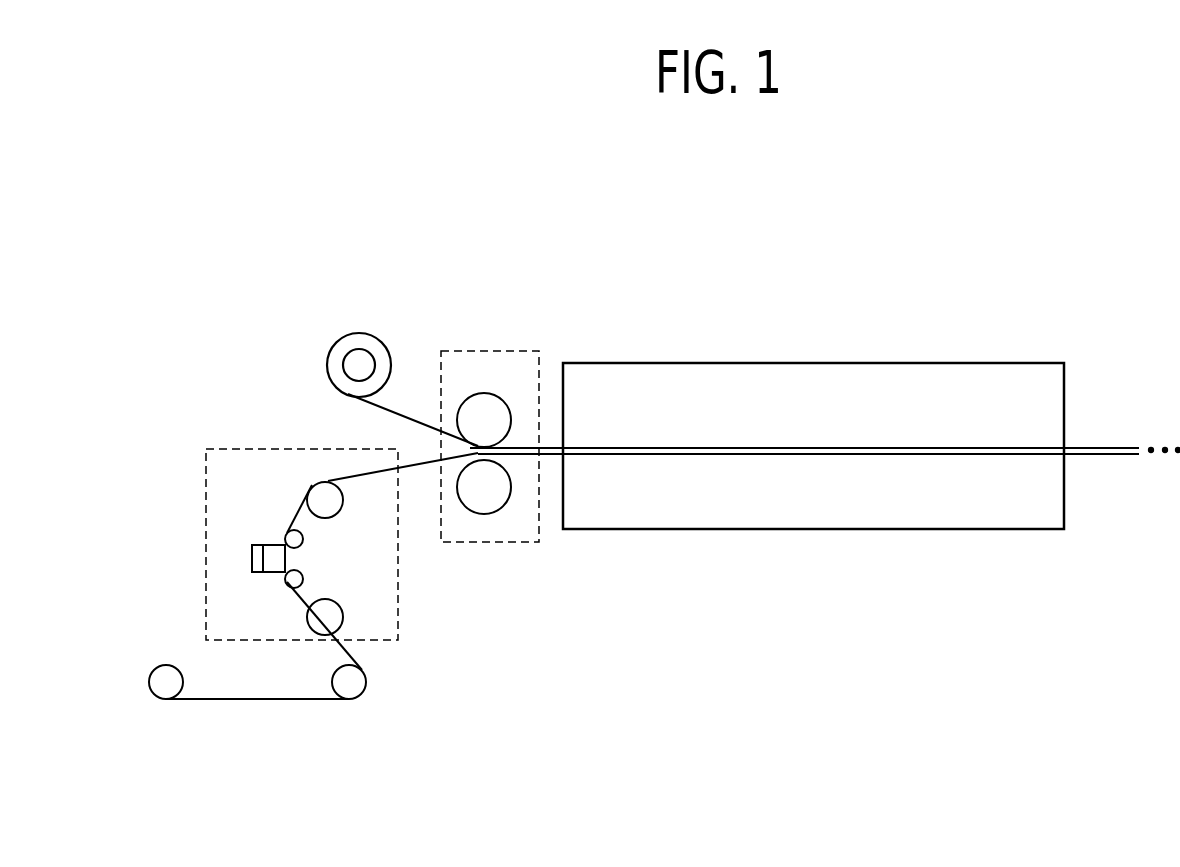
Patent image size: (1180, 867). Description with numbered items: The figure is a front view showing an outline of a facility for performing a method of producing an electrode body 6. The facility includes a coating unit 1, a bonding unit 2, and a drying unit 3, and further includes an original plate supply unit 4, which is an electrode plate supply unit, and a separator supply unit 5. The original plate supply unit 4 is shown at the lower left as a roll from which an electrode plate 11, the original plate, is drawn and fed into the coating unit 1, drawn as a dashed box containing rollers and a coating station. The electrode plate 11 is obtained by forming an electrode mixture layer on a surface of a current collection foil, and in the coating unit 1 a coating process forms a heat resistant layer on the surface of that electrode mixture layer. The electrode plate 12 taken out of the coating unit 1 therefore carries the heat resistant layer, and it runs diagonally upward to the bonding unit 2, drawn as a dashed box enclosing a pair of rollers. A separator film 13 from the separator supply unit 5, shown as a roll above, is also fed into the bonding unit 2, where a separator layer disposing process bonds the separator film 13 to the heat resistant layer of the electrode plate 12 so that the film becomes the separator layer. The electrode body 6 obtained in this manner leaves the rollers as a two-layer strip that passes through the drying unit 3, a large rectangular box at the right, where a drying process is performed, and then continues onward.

The coating unit 1 is at (206, 505).
The bonding unit 2 is at (489, 351).
The drying unit 3 is at (954, 363).
The original plate supply unit 4 is at (152, 700).
The separator supply unit 5 is at (358, 333).
The electrode body 6 is at (1108, 447).
The electrode plate 11 is at (292, 700).
The electrode plate 12 is at (412, 468).
The separator film 13 is at (404, 416).